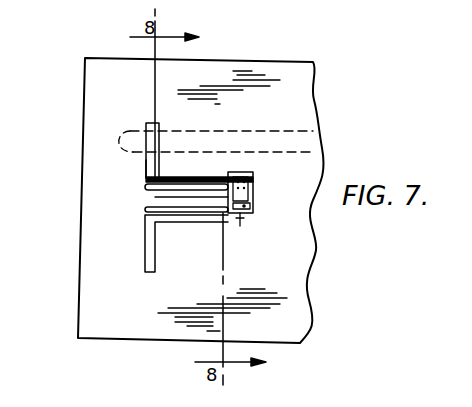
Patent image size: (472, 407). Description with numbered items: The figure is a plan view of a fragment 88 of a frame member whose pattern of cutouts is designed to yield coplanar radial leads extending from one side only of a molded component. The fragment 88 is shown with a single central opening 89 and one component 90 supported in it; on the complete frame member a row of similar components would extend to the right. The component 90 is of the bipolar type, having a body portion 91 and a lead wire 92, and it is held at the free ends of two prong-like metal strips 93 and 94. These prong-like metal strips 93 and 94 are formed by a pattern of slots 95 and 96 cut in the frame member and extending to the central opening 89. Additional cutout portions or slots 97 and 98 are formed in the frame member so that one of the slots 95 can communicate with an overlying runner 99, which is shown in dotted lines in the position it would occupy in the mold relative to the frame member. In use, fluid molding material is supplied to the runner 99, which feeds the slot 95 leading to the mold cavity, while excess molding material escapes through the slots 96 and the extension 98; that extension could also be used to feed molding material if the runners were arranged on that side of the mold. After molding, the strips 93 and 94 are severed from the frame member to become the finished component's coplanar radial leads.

The fragment of a frame member 88 is at (84, 312).
The central opening 89 is at (240, 226).
The component 90 is at (253, 175).
The body portion 91 is at (248, 195).
The lead wire 92 is at (240, 218).
The prong-like metal strip 93 is at (212, 177).
The prong-like metal strip 94 is at (218, 216).
The slot 95 is at (170, 177).
The slot 96 is at (177, 214).
The cutout portion or slot 97 is at (146, 163).
The cutout portion or slot 98 is at (145, 262).
The runner 99 is at (129, 131).